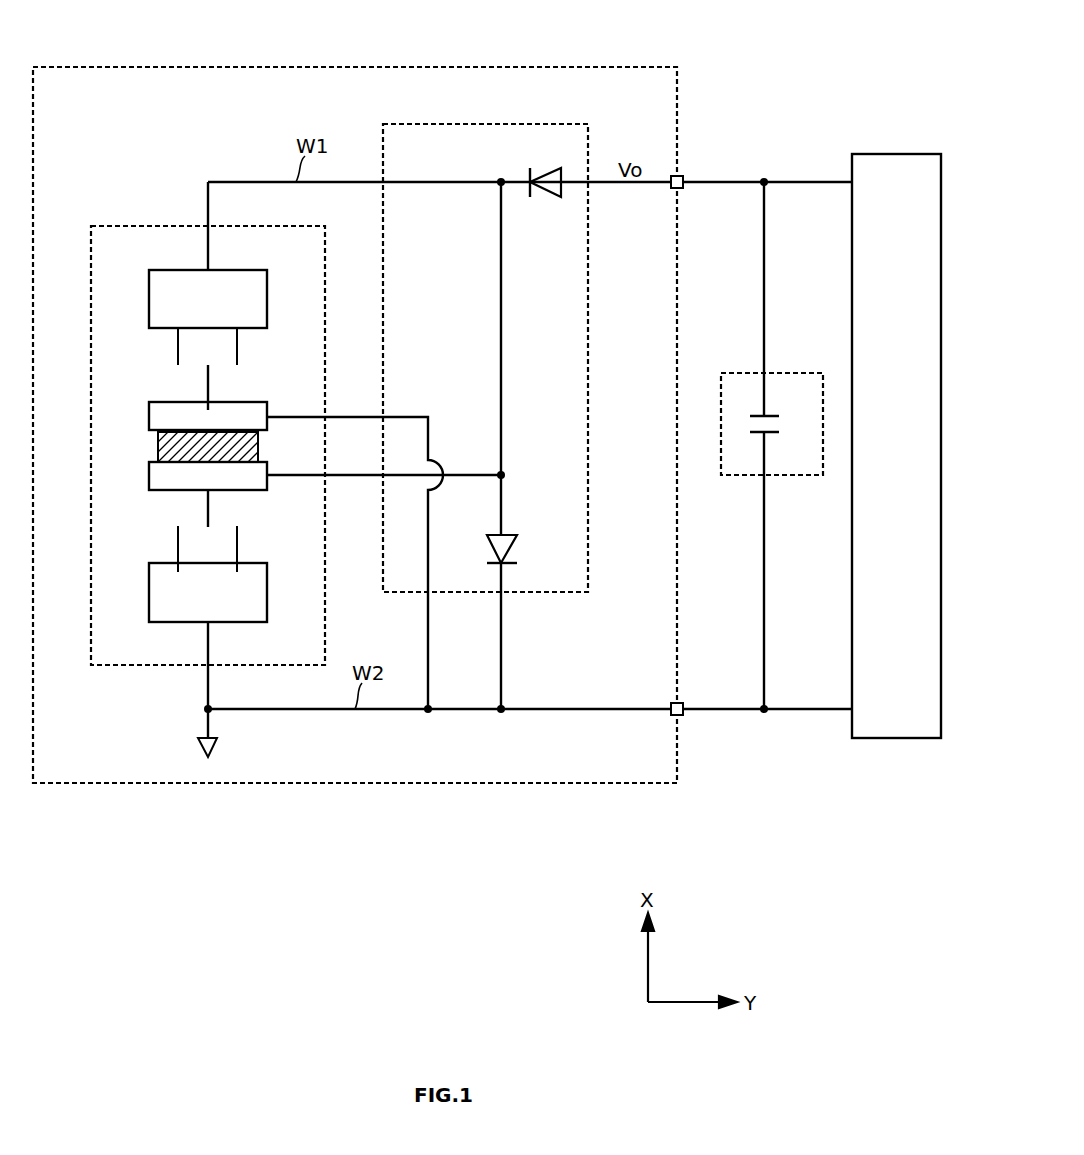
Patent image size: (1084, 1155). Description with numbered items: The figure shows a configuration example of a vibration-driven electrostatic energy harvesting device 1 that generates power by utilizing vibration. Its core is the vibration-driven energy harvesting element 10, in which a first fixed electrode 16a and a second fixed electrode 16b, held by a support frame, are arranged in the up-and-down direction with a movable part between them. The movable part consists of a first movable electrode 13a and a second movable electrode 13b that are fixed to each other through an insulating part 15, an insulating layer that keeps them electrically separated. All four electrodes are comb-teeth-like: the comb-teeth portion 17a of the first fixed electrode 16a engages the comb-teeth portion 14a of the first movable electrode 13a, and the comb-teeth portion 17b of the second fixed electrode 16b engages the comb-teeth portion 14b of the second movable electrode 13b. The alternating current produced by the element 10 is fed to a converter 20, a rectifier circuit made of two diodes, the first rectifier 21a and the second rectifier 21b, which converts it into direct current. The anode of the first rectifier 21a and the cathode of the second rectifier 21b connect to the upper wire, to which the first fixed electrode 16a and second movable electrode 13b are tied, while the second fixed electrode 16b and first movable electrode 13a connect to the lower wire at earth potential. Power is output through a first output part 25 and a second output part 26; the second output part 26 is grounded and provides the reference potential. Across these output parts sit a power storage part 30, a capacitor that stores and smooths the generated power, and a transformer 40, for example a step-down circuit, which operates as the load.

The energy harvesting device 1 is at (587, 67).
The vibration-driven energy harvesting element 10 is at (131, 226).
The first movable electrode 13a is at (149, 410).
The second movable electrode 13b is at (149, 478).
The comb-teeth portion 14a is at (266, 358).
The comb-teeth portion 14b is at (266, 495).
The insulating part 15 is at (258, 446).
The first fixed electrode 16a is at (223, 270).
The second fixed electrode 16b is at (222, 622).
The comb-teeth portion 17a is at (150, 332).
The comb-teeth portion 17b is at (150, 518).
The converter 20 is at (517, 124).
The first rectifier 21a is at (509, 525).
The second rectifier 21b is at (545, 200).
The first output part 25 is at (683, 176).
The second output part 26 is at (684, 703).
The power storage part 30 is at (795, 373).
The transformer 40 is at (910, 154).